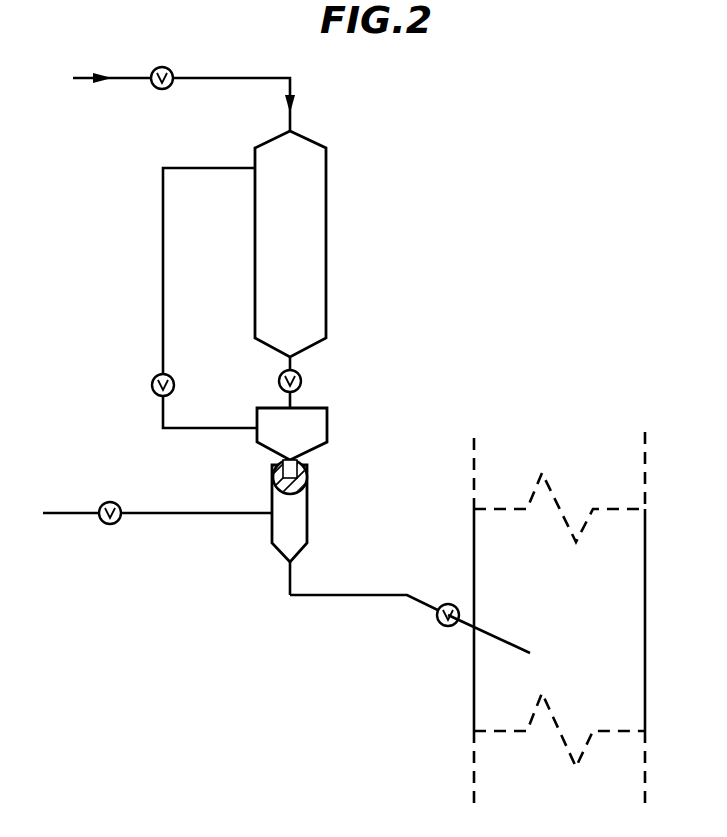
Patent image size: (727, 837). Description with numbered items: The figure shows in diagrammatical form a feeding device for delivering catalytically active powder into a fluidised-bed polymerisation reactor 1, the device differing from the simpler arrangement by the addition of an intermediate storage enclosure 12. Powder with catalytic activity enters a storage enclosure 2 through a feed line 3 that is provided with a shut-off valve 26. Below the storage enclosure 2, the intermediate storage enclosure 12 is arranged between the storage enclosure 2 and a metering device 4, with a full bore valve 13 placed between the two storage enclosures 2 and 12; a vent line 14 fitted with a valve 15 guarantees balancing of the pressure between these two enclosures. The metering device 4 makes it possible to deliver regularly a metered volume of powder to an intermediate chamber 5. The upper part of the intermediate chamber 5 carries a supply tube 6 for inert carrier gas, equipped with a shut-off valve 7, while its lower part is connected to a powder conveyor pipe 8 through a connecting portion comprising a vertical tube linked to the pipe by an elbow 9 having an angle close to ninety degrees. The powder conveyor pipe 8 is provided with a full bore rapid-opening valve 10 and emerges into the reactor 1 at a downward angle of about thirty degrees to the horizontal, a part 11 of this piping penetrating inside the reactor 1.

The fluidised-bed polymerisation reactor 1 is at (474, 541).
The storage enclosure 2 is at (308, 234).
The feed line 3 is at (126, 76).
The metering device 4 is at (310, 481).
The intermediate chamber 5 is at (296, 527).
The supply tube 6 is at (84, 511).
The shut-off valve 7 is at (112, 525).
The powder conveyor pipe 8 is at (374, 598).
The elbow 9 is at (287, 598).
The full bore rapid-opening valve 10 is at (441, 627).
The penetrating part of the piping 11 is at (508, 645).
The intermediate storage enclosure 12 is at (305, 431).
The full bore valve 13 is at (302, 380).
The vent line 14 is at (163, 266).
The valve 15 is at (152, 386).
The shut-off valve 26 is at (160, 89).